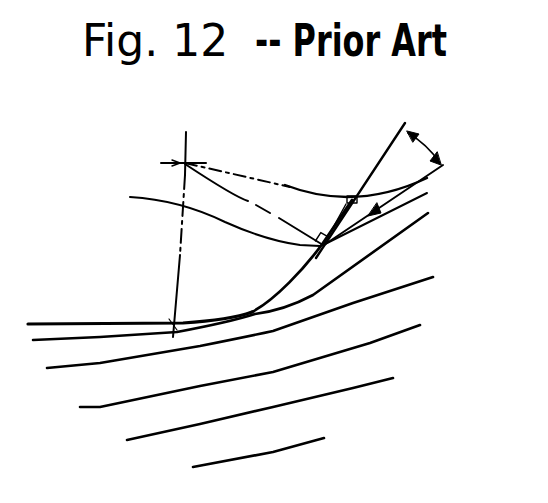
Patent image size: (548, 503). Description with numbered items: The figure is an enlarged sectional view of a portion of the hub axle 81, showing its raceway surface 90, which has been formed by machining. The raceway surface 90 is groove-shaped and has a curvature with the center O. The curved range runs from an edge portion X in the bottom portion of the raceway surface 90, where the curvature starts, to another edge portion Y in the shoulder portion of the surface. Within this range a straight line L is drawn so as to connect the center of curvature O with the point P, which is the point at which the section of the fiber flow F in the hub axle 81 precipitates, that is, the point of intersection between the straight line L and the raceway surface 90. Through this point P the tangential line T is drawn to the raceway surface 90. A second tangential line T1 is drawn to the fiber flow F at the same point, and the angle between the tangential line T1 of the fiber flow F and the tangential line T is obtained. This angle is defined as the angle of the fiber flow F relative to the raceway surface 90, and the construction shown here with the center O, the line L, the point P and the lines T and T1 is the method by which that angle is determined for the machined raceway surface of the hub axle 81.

The raceway surface 90 is at (252, 311).
The hub axle 81 is at (362, 338).
The center of curvature O is at (236, 230).
The straight line L is at (248, 206).
The point P is at (210, 211).
The edge portion X is at (161, 310).
The edge portion Y is at (340, 200).
The tangential line T is at (390, 148).
The tangential line of the fiber flow T1 is at (441, 168).
The fiber flow F is at (367, 218).